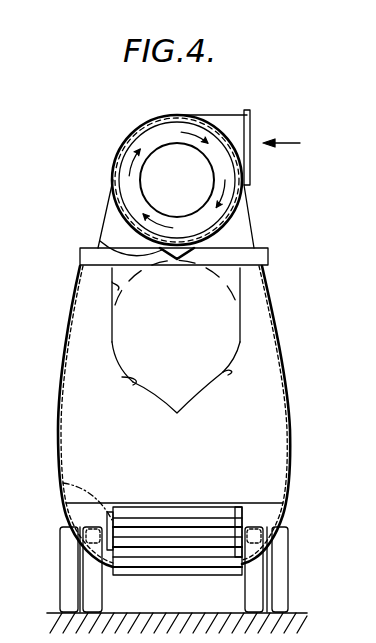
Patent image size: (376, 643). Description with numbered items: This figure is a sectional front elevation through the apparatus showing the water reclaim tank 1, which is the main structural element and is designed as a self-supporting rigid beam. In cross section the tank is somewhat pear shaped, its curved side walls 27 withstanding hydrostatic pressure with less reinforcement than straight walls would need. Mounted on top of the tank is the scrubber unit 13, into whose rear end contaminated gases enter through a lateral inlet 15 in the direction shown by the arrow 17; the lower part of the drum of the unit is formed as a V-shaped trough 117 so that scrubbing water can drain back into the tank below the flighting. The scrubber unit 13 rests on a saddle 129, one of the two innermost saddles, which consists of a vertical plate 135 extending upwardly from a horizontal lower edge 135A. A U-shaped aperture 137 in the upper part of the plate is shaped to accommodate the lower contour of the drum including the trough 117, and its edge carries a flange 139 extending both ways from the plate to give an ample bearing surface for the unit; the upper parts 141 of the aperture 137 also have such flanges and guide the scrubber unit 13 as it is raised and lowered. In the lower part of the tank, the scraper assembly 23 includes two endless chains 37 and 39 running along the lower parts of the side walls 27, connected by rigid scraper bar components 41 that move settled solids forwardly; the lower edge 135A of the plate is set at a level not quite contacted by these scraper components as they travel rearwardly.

The water reclaim tank 1 is at (274, 351).
The scrubber unit 13 is at (173, 131).
The lateral inlet 15 is at (258, 101).
The arrow 17 is at (295, 142).
The scraper assembly 23 is at (192, 511).
The side walls 27 is at (67, 362).
The endless chain 37 is at (247, 506).
The endless chain 39 is at (63, 483).
The scraper bar components 41 is at (133, 507).
The trough 117 is at (102, 241).
The saddle 129 is at (78, 337).
The vertical plate 135 is at (268, 412).
The horizontal lower edge 135A is at (78, 517).
The U-shaped aperture 137 is at (229, 373).
The flange 139 is at (122, 377).
The upper parts of the aperture 141 is at (112, 283).